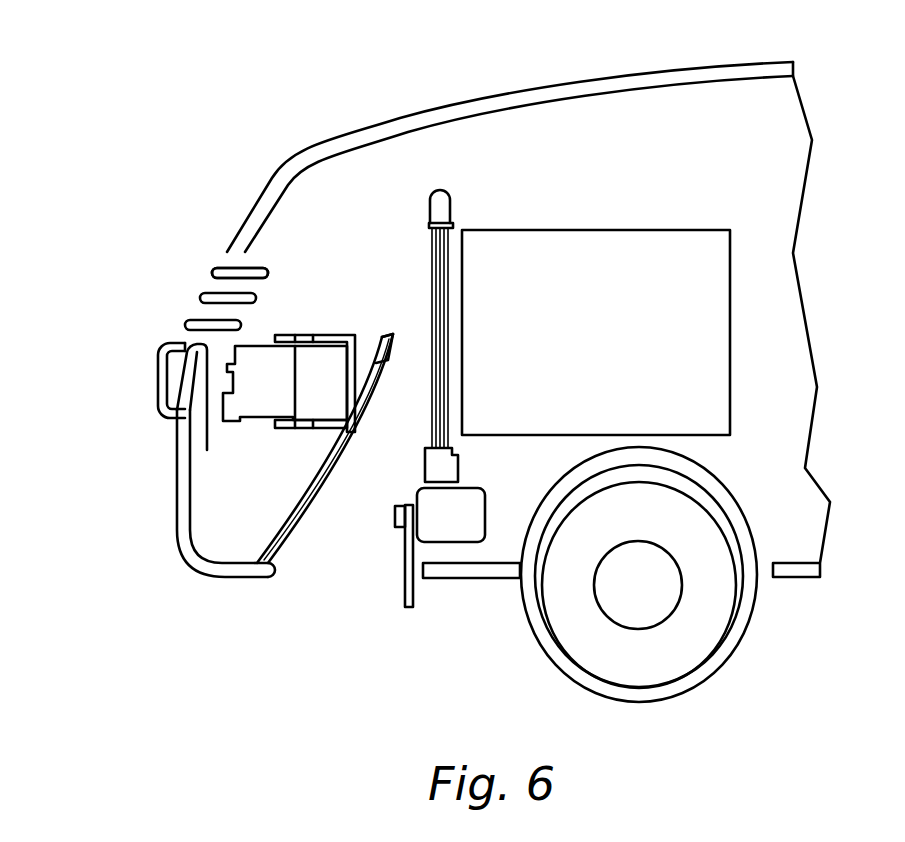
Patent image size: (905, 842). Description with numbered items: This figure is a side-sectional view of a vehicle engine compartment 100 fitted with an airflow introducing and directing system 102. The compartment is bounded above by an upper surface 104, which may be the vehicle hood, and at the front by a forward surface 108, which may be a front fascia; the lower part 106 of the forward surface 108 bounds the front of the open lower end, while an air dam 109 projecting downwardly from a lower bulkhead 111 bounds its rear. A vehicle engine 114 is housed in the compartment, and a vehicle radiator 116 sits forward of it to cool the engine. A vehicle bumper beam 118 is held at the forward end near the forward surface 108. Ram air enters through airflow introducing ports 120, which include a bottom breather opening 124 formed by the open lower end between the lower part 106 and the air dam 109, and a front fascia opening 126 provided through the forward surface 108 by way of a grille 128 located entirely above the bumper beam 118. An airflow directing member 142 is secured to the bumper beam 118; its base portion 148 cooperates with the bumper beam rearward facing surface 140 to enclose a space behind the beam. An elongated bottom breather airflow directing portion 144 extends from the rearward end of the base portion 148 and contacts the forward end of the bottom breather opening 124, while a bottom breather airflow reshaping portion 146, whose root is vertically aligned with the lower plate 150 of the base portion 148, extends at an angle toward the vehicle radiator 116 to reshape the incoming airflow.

The vehicle engine compartment 100 is at (411, 178).
The airflow introducing and directing system 102 is at (132, 344).
The vehicle engine compartment upper surface 104 is at (357, 138).
The lower part of the forward surface 106 is at (240, 580).
The vehicle engine compartment forward surface 108 is at (177, 498).
The air dam 109 is at (414, 592).
The lower bulkhead 111 is at (455, 517).
The vehicle engine 114 is at (668, 237).
The vehicle radiator 116 is at (452, 208).
The vehicle bumper beam 118 is at (232, 421).
The airflow introducing ports 120 is at (131, 275).
The bottom breather opening 124 is at (374, 612).
The front fascia opening 126 is at (205, 284).
The vehicle front fascia or grille 128 is at (222, 268).
The vehicle bumper beam rearward facing surface 140 is at (296, 380).
The airflow directing member 142 is at (308, 449).
The elongated bottom breather airflow directing portion 144 is at (304, 507).
The bottom breather airflow reshaping portion 146 is at (368, 326).
The base portion 148 is at (301, 335).
The lower plate 150 is at (302, 432).